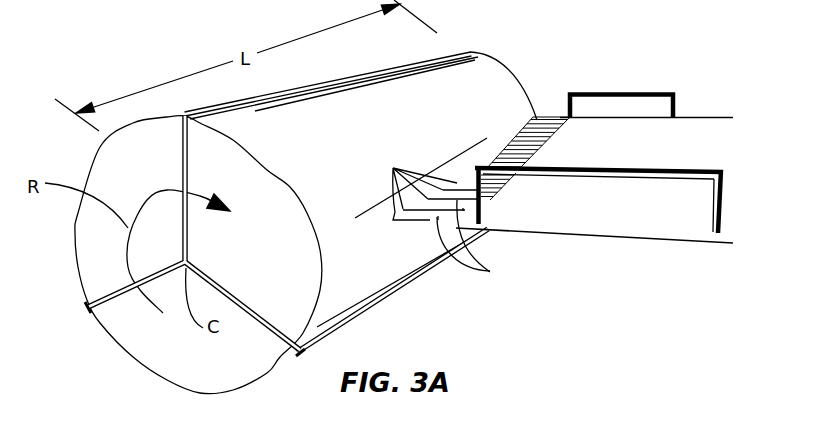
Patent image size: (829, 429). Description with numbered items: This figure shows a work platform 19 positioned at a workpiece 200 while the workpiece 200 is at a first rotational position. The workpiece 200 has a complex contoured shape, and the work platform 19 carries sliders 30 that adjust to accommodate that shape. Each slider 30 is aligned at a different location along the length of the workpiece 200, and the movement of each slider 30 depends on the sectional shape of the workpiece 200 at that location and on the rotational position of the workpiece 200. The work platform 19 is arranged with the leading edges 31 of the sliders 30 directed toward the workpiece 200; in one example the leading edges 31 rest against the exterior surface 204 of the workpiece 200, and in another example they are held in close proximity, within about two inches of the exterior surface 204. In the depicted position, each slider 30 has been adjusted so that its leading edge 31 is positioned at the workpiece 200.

The work platform 19 is at (673, 137).
The slider 30 is at (490, 272).
The leading edge 31 is at (392, 168).
The workpiece 200 is at (418, 82).
The exterior surface 204 is at (500, 75).